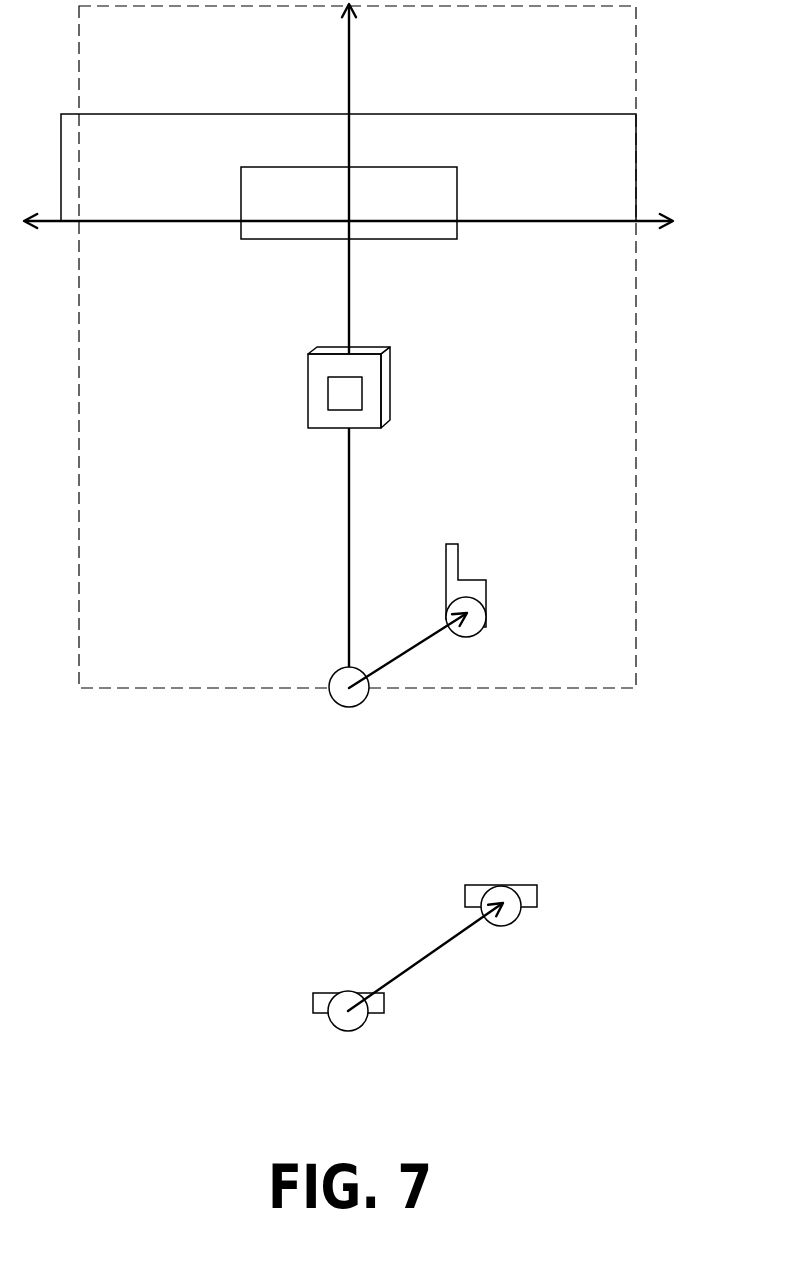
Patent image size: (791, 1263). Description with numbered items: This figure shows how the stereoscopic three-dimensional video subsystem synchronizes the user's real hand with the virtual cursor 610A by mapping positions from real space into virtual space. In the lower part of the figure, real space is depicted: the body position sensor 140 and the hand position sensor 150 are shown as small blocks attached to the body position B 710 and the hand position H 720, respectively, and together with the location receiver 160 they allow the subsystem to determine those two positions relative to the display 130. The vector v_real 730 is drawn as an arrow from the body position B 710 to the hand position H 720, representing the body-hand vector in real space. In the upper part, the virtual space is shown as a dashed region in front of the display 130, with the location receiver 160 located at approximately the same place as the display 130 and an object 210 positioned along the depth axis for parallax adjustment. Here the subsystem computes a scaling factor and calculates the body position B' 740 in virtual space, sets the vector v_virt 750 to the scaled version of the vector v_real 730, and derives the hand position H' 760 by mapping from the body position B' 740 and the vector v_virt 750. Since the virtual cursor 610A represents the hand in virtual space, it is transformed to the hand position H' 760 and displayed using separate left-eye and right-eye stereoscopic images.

The display 130 is at (637, 140).
The location receiver 160 is at (458, 203).
The object 210 is at (390, 396).
The virtual cursor 610A is at (455, 543).
The hand position H' in virtual space 760 is at (484, 630).
The vector v_virt 750 is at (420, 650).
The body position B' in virtual space 740 is at (347, 706).
The appendage position sensor 150 is at (463, 898).
The hand position H 720 is at (503, 886).
The vector v_real 730 is at (437, 947).
The body position sensor 140 is at (313, 997).
The body position B 710 is at (349, 1030).